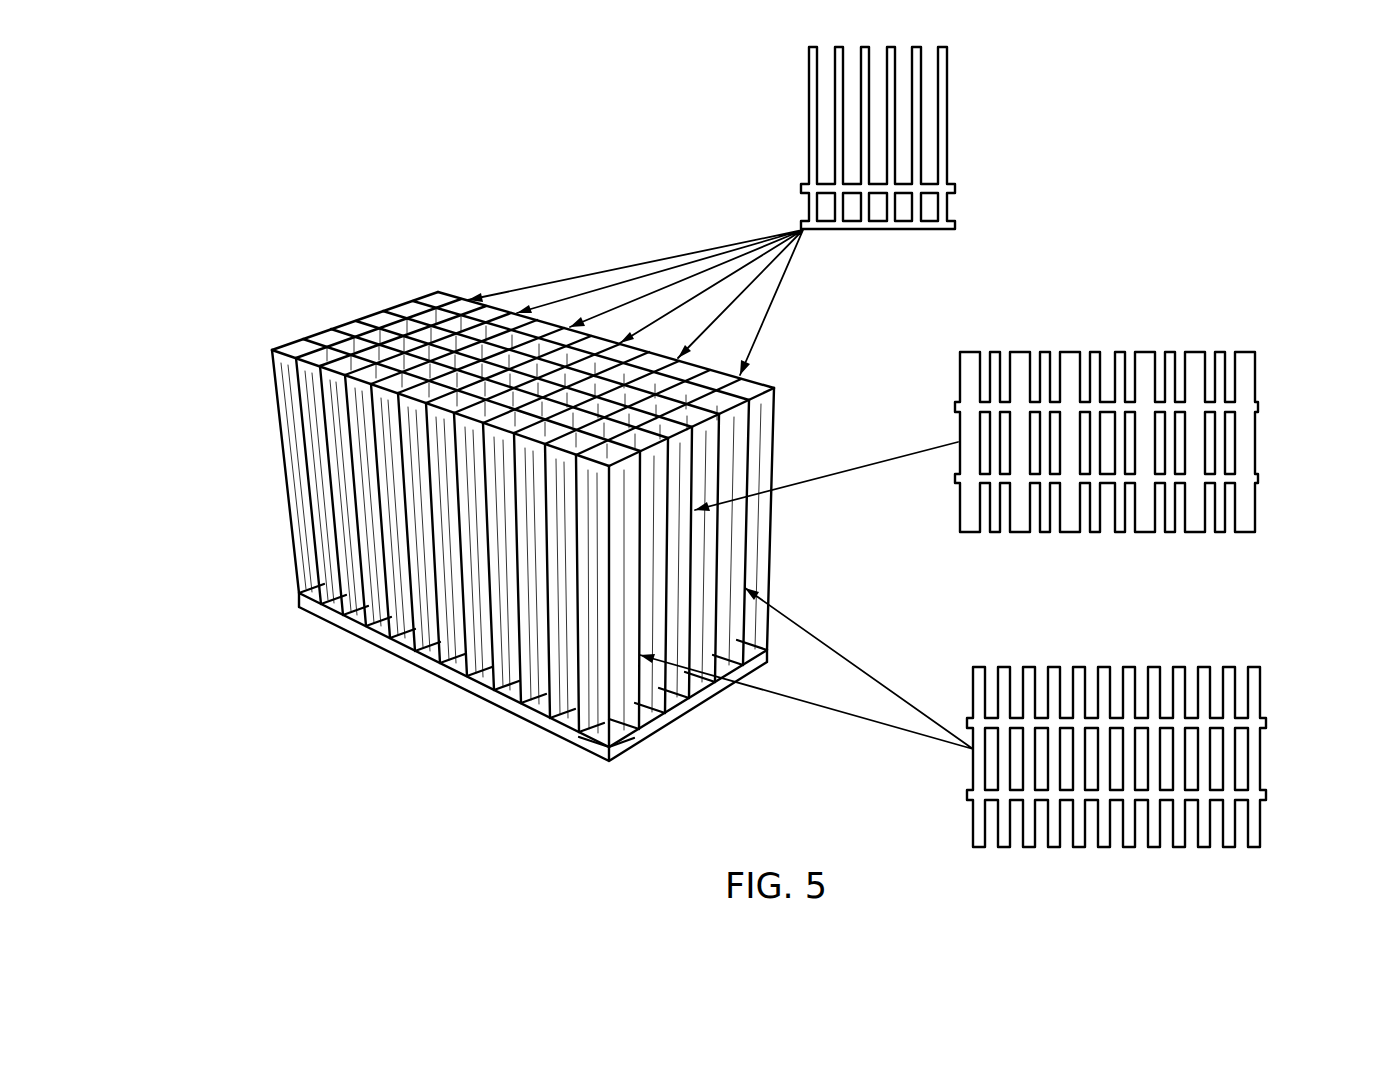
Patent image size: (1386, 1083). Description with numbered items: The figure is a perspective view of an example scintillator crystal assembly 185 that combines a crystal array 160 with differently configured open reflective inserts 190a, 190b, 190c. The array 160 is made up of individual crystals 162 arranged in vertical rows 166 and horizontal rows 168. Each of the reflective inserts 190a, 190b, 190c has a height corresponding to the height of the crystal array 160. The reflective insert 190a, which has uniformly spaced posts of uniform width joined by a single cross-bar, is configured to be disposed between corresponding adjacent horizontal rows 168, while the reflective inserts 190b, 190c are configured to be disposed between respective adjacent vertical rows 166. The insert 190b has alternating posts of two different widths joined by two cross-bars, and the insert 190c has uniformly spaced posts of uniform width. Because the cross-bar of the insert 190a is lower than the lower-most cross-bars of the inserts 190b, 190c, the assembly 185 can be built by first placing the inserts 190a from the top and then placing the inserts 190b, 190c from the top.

The array 160 is at (493, 475).
The crystals 162 is at (293, 535).
The vertical rows 166 is at (774, 374).
The horizontal rows 168 is at (352, 308).
The scintillator crystal assembly 185 is at (205, 402).
The open reflective insert 190a is at (948, 115).
The open reflective insert 190b is at (1258, 510).
The open reflective insert 190c is at (1268, 826).